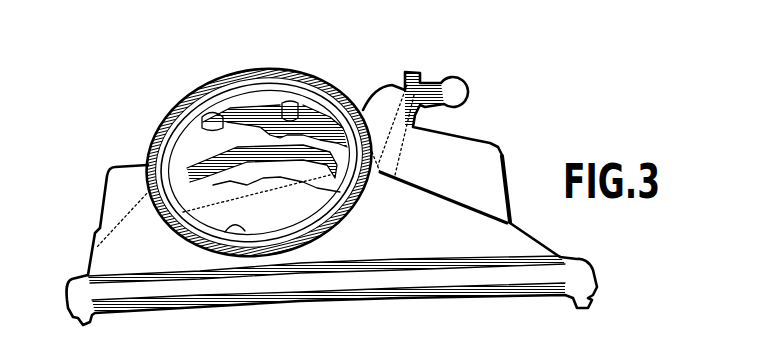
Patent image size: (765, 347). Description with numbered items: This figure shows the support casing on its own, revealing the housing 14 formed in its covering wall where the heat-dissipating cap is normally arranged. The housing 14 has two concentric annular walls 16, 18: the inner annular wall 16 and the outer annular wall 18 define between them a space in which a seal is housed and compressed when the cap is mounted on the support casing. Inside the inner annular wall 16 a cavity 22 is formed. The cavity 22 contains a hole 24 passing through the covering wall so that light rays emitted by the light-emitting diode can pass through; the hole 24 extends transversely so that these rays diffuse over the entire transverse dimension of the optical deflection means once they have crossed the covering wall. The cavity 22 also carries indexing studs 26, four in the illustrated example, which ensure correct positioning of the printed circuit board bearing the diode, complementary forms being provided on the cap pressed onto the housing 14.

The housing 14 is at (160, 106).
The inner annular wall 16 is at (175, 160).
The outer annular wall 18 is at (333, 86).
The cavity 22 is at (325, 203).
The hole 24 is at (213, 183).
The indexing studs 26 is at (285, 104).